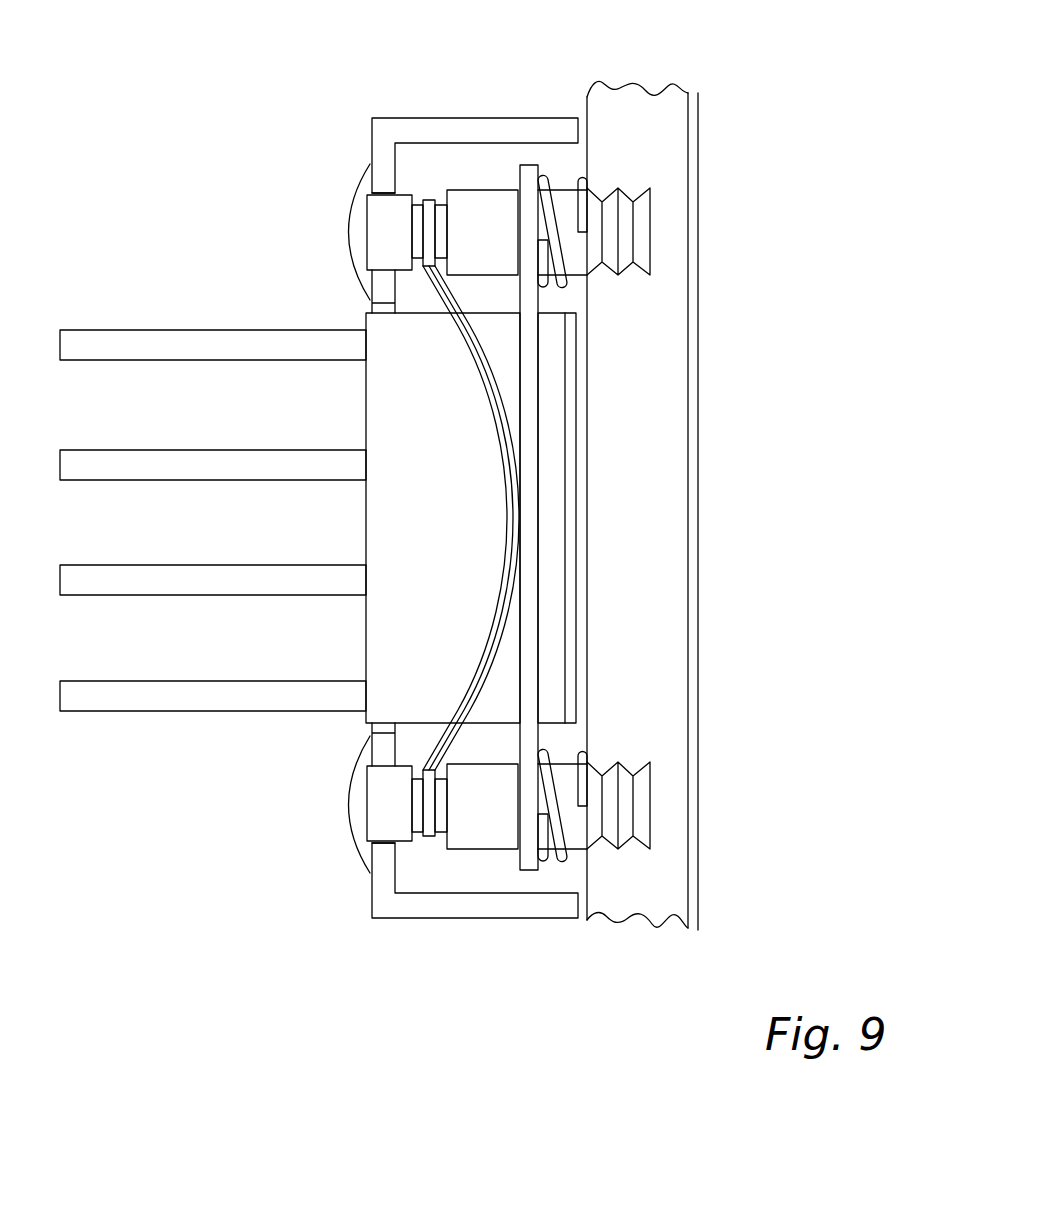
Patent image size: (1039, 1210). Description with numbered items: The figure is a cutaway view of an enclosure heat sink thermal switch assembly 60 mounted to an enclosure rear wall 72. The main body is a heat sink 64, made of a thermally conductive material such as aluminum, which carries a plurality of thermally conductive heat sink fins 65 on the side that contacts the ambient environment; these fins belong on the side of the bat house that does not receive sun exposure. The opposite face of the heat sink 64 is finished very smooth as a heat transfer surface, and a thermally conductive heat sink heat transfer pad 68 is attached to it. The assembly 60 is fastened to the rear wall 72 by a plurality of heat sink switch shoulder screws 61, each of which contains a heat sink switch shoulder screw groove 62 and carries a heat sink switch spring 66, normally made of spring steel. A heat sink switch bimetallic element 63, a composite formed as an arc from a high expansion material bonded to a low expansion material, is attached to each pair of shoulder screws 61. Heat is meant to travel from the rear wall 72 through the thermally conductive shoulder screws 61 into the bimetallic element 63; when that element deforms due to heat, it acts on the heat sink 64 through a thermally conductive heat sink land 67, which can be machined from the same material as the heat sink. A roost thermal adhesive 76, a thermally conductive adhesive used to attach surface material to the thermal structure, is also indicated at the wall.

The heat sink thermal switch assembly 60 is at (200, 820).
The heat sink switch shoulder screw 61 is at (352, 196).
The heat sink switch shoulder screw groove 62 is at (418, 200).
The heat sink switch bimetallic element 63 is at (473, 357).
The heat sink 64 is at (97, 330).
The heat sink fins 65 is at (73, 481).
The heat sink switch spring 66 is at (560, 286).
The heat sink land 67 is at (518, 167).
The heat sink heat transfer pad 68 is at (570, 610).
The enclosure rear wall 72 is at (611, 78).
The roost thermal adhesive 76 is at (694, 93).